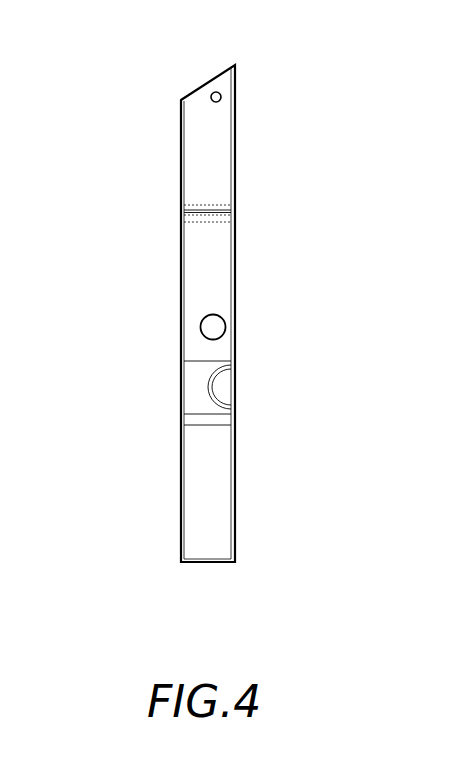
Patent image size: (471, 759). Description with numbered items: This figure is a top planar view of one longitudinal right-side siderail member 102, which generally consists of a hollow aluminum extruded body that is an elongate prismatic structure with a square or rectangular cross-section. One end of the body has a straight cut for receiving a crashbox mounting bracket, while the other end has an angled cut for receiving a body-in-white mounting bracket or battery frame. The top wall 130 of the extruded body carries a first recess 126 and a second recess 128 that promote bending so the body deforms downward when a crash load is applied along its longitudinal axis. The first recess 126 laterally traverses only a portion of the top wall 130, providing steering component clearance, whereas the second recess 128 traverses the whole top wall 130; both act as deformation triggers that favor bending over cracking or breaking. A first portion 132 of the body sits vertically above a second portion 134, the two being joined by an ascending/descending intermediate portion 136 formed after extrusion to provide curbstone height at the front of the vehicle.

The right-side siderail member 102 is at (243, 102).
The first recess 126 is at (238, 383).
The second recess 128 is at (238, 212).
The top wall 130 is at (202, 260).
The first portion 132 is at (173, 520).
The second portion 134 is at (173, 288).
The intermediate portion 136 is at (175, 420).